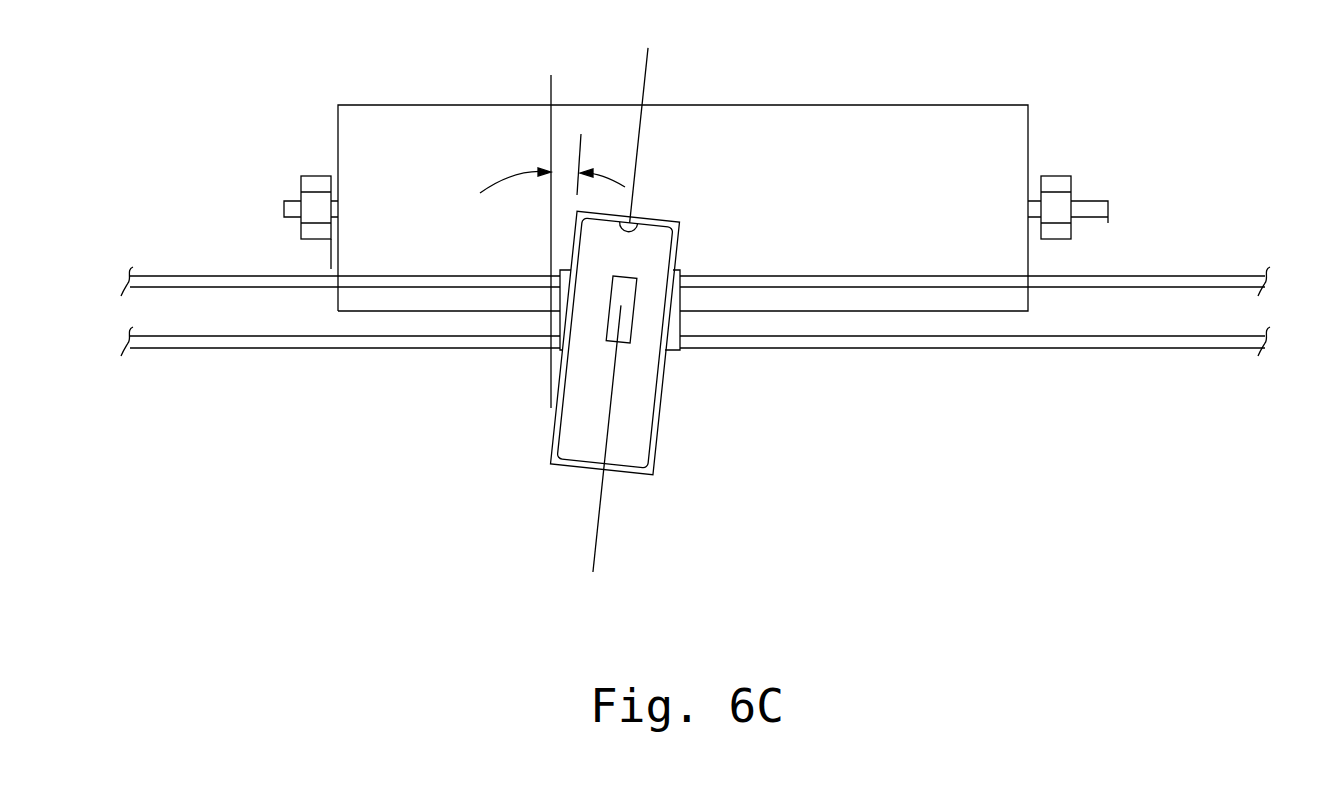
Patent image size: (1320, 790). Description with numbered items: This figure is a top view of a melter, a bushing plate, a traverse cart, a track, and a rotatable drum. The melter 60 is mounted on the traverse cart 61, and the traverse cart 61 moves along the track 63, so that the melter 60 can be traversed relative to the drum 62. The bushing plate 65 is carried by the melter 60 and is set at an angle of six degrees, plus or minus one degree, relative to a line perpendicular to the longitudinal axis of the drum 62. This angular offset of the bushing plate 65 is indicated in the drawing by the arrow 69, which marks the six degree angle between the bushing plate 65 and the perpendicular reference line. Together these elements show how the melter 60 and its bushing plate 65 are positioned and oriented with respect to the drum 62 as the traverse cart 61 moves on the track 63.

The melter 60 is at (630, 425).
The traverse cart 61 is at (680, 353).
The drum 62 is at (1036, 100).
The track 63 is at (1183, 287).
The bushing plate 65 is at (623, 308).
The arrow 69 is at (564, 146).